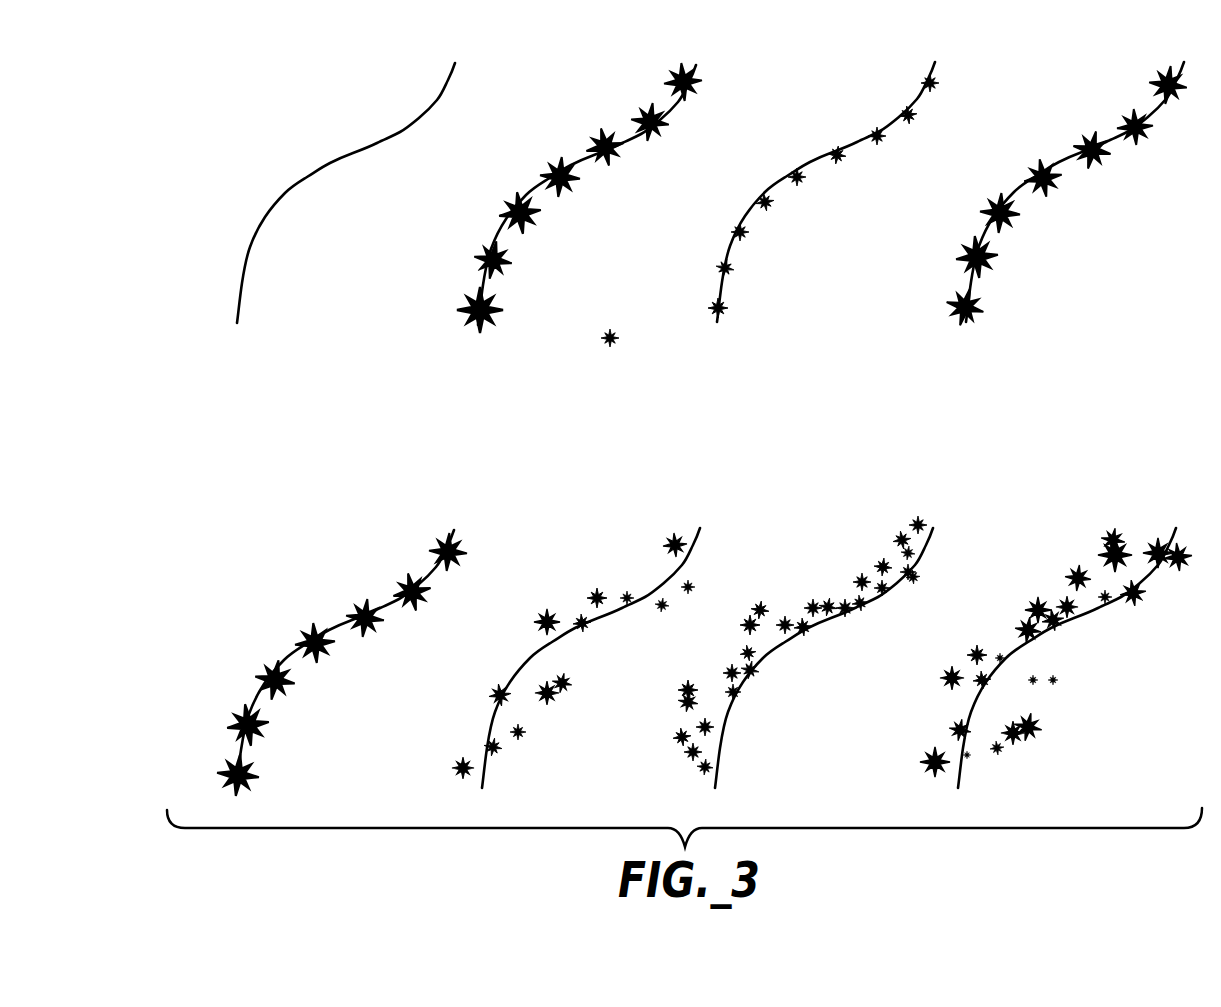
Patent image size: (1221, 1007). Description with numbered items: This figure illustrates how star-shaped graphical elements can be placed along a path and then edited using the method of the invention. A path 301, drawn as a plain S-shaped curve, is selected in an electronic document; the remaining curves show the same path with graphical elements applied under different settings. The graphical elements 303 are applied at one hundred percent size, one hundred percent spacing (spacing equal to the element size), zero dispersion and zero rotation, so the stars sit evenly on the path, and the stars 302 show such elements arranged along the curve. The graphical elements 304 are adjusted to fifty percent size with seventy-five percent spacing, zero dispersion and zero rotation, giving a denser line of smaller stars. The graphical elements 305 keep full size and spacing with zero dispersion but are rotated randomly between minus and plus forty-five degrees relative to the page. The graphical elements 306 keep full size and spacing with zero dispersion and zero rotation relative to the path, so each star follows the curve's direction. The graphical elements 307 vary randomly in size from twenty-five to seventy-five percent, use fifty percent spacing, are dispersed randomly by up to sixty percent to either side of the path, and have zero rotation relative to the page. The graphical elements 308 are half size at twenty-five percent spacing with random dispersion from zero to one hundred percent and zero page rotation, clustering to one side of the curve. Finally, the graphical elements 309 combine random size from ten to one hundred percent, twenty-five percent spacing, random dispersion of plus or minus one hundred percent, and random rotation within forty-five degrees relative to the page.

The path 301 is at (346, 193).
The path with large uniform gaussian kernels 302 is at (580, 197).
The graphical elements 303 is at (660, 357).
The graphical elements 304 is at (823, 192).
The graphical elements 305 is at (1066, 196).
The graphical elements 306 is at (341, 664).
The graphical elements 307 is at (576, 658).
The graphical elements 308 is at (802, 652).
The graphical elements 309 is at (1056, 657).